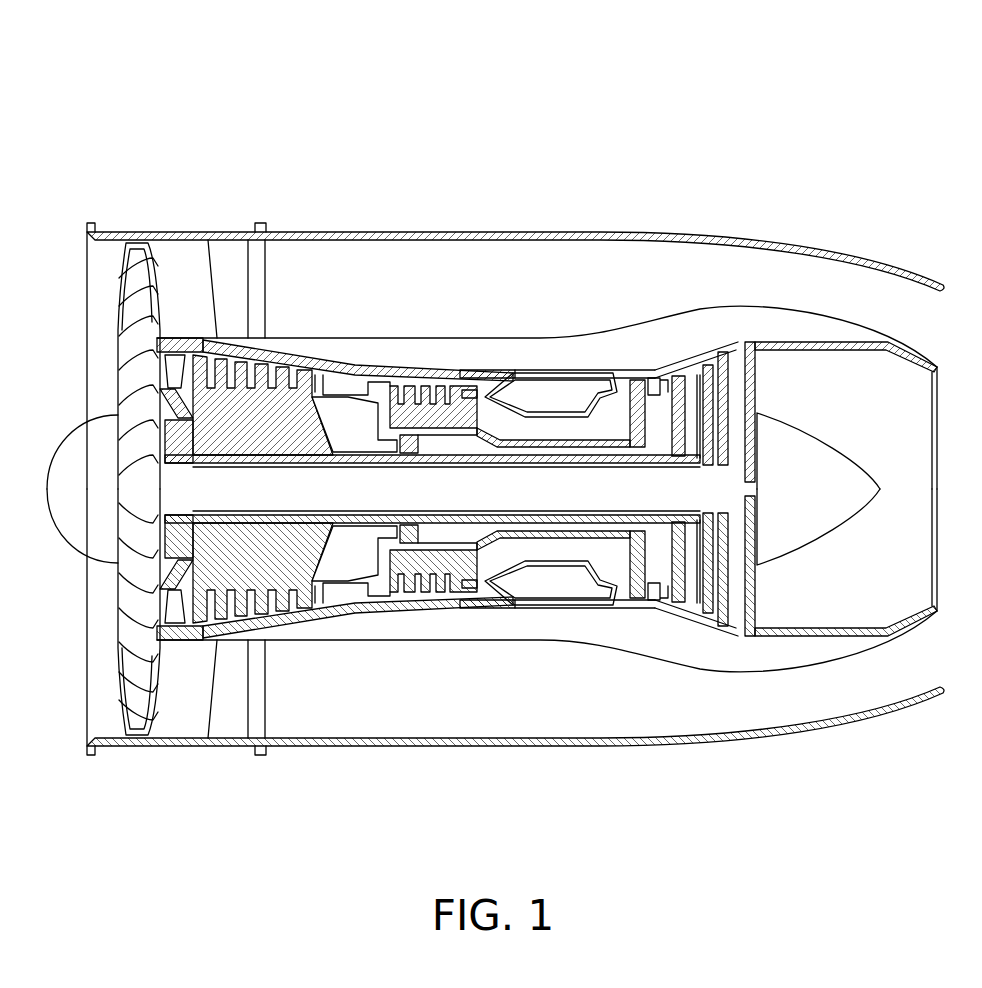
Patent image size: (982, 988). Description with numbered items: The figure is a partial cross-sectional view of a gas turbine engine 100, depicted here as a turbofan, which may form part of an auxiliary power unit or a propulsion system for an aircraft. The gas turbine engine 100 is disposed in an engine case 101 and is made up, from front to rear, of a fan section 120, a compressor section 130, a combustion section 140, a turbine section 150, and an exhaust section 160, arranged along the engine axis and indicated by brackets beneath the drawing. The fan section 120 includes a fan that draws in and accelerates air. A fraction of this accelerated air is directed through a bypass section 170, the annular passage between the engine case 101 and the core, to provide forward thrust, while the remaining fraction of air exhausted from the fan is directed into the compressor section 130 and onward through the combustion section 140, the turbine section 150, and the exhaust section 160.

The gas turbine engine 100 is at (322, 130).
The engine case 101 is at (328, 231).
The bypass section 170 is at (438, 258).
The fan section 120 is at (43, 782).
The compressor section 130 is at (432, 782).
The combustion section 140 is at (595, 782).
The turbine section 150 is at (597, 782).
The exhaust section 160 is at (887, 782).